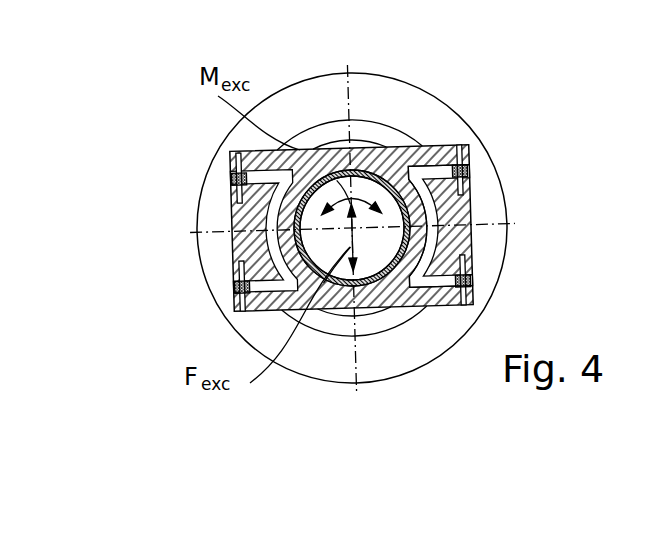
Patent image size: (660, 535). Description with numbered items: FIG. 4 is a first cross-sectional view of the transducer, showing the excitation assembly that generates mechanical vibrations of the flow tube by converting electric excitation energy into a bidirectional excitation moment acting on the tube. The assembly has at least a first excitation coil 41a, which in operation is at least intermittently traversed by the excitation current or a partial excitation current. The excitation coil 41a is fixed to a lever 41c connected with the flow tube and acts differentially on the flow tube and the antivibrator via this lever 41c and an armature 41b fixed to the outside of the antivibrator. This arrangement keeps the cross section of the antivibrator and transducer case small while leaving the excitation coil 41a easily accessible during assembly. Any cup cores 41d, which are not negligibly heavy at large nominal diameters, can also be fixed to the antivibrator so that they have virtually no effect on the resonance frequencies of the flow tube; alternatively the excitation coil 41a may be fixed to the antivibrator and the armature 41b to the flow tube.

The first excitation coil 41a is at (465, 164).
The armature 41b is at (470, 181).
The lever 41c is at (437, 146).
The cup cores 41d is at (470, 172).